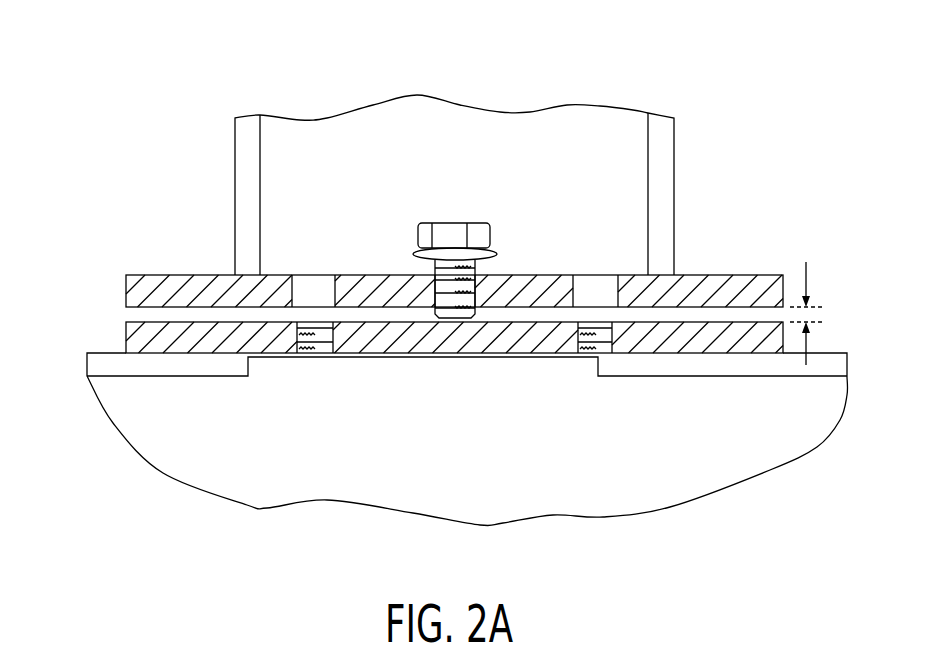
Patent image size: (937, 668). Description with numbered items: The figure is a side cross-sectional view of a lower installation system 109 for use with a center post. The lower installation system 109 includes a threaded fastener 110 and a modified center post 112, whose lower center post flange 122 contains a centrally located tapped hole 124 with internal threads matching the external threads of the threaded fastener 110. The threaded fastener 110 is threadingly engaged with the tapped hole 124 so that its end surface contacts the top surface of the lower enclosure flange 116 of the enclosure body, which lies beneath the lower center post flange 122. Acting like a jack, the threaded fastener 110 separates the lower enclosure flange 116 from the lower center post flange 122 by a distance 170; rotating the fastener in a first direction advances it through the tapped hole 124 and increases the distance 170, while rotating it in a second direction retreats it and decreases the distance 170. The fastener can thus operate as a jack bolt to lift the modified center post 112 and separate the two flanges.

The lower installation system 109 is at (146, 45).
The modified center post 112 is at (247, 147).
The lower center post flange 122 is at (137, 289).
The lower enclosure flange 116 is at (137, 338).
The threaded fastener 110 is at (435, 272).
The tapped hole 124 is at (426, 298).
The distance 170 is at (806, 285).